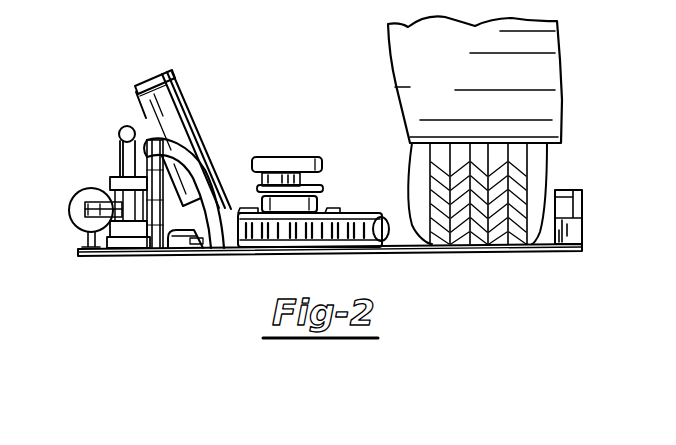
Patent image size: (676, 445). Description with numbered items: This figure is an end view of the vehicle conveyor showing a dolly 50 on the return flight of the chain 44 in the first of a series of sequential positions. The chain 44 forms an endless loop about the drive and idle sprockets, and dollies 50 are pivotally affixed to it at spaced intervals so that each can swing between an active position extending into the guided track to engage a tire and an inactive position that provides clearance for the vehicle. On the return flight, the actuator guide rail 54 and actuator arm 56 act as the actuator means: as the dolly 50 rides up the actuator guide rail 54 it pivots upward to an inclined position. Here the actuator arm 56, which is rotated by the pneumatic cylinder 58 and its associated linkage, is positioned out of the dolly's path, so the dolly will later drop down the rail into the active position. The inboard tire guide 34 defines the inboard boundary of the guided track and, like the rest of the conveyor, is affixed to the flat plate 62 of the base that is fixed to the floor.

The inboard tire guide 34 is at (580, 195).
The chain 44 is at (378, 248).
The dolly 50 is at (176, 81).
The actuator guide rail 54 is at (177, 244).
The actuator arm 56 is at (120, 131).
The pneumatic cylinder 58 is at (71, 200).
The flat plate 62 is at (539, 250).